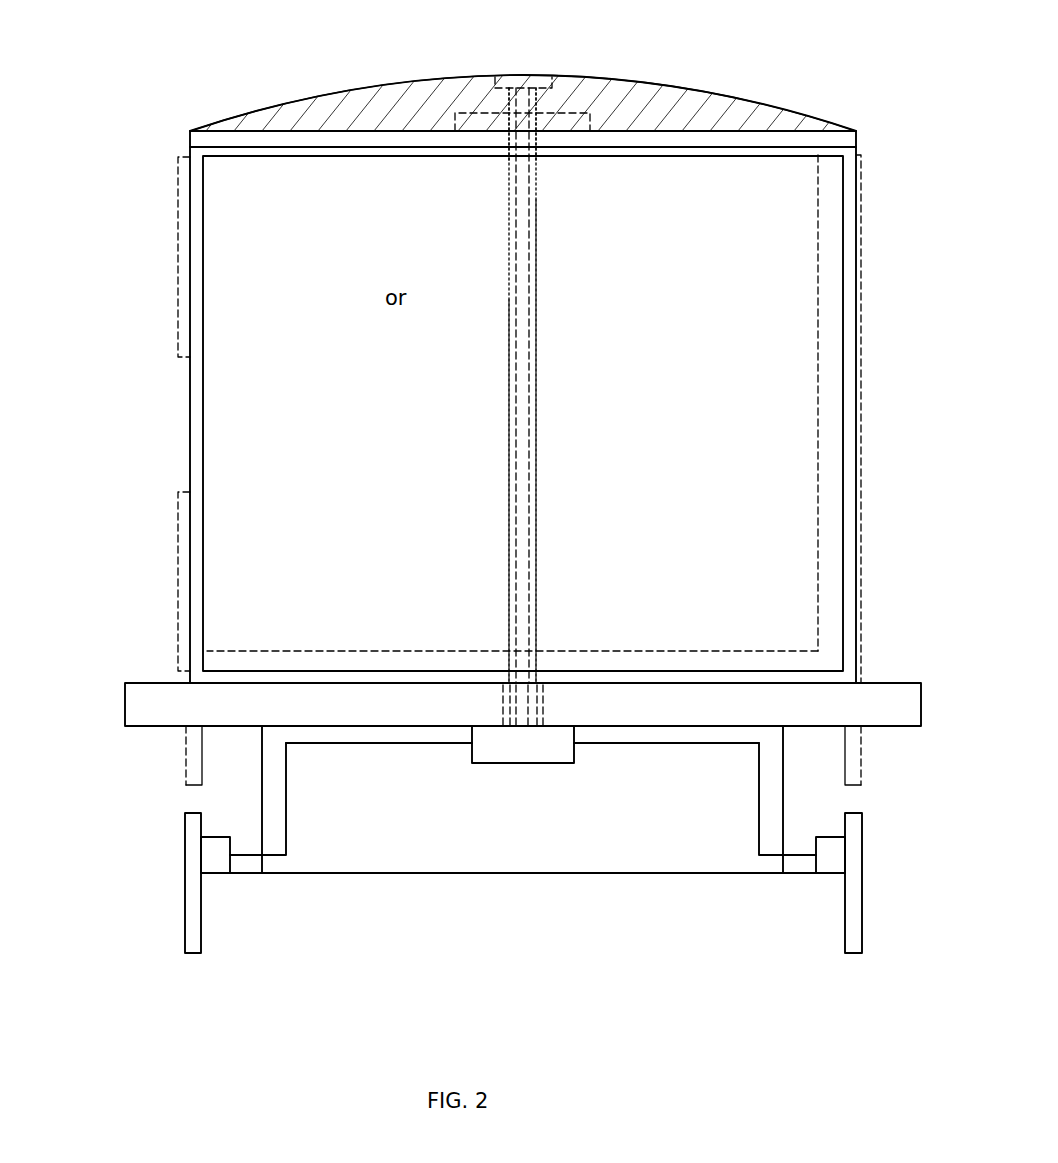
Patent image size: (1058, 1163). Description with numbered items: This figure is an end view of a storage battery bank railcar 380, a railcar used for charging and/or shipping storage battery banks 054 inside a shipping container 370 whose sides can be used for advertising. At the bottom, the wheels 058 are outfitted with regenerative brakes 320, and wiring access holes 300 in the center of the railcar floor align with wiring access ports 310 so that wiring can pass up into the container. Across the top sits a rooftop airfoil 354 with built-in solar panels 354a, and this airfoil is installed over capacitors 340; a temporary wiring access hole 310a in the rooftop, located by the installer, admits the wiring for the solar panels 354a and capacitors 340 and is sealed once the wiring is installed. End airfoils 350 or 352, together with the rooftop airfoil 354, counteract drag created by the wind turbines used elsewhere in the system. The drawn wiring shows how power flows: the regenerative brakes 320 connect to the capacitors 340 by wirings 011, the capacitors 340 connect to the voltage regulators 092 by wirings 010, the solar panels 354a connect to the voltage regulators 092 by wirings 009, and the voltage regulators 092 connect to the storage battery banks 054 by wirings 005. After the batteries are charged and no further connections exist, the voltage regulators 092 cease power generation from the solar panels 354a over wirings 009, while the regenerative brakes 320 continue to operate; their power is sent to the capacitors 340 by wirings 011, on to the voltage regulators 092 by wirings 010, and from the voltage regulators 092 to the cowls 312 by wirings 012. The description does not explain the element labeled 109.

The rooftop airfoil 354 is at (190, 135).
The solar panel 354a is at (390, 86).
The cowl 312 is at (522, 75).
The capacitor 340 is at (472, 148).
The wiring access port 310 is at (503, 686).
The temporary wiring access hole 310a is at (537, 160).
The shipping container 370 is at (190, 420).
The storage battery bank 054 is at (205, 640).
The end airfoil 350 is at (414, 285).
The end airfoil 352 is at (414, 341).
The wiring 011 is at (536, 303).
The wiring 012 is at (529, 368).
The wiring 010 is at (516, 428).
The shaft outer line 109 is at (509, 505).
The wiring 009 is at (818, 463).
The wiring 005 is at (330, 650).
The railcar 380 is at (125, 703).
The wiring access hole 300 is at (545, 703).
The voltage regulator 092 is at (543, 755).
The regenerative brake 320 is at (214, 873).
The wheel 058 is at (185, 882).